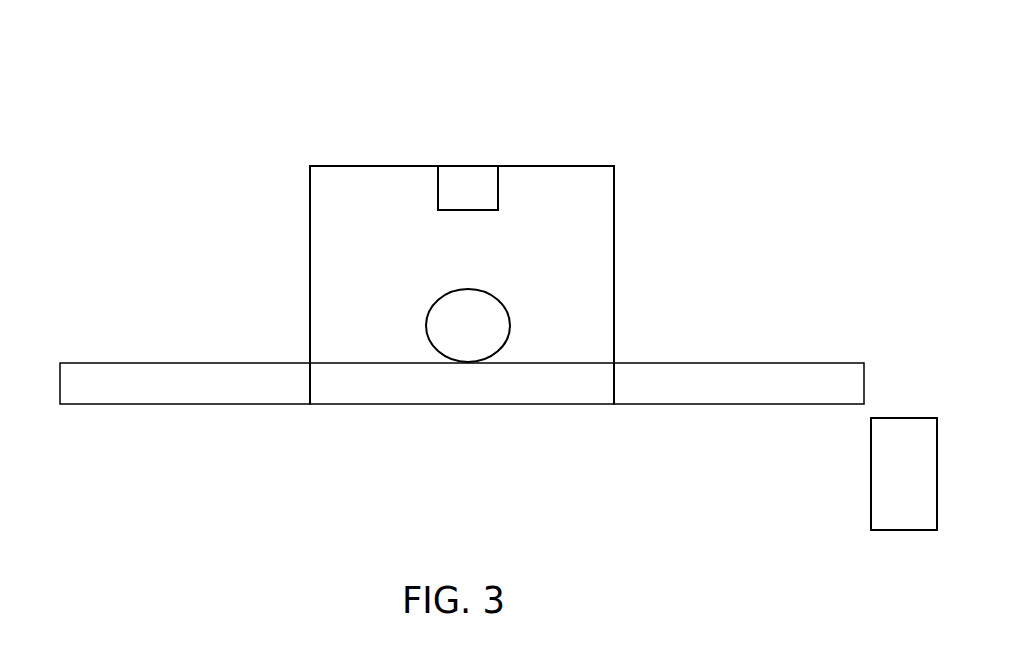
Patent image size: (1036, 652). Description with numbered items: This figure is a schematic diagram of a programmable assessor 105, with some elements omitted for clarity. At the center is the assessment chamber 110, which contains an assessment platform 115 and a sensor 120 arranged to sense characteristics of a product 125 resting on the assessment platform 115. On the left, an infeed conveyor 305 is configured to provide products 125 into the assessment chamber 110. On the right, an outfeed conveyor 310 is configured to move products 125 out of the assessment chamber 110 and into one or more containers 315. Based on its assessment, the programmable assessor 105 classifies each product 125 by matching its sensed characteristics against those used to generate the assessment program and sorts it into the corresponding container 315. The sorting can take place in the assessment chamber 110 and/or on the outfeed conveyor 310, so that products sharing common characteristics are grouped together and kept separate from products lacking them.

The programmable assessor 105 is at (781, 61).
The assessment chamber 110 is at (310, 264).
The assessment platform 115 is at (554, 363).
The sensor 120 is at (438, 187).
The product 125 is at (426, 323).
The infeed conveyor 305 is at (157, 363).
The outfeed conveyor 310 is at (766, 363).
The container 315 is at (871, 475).